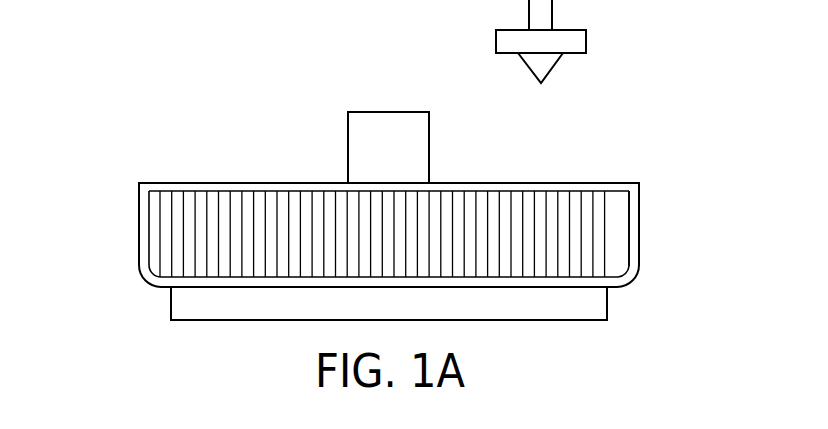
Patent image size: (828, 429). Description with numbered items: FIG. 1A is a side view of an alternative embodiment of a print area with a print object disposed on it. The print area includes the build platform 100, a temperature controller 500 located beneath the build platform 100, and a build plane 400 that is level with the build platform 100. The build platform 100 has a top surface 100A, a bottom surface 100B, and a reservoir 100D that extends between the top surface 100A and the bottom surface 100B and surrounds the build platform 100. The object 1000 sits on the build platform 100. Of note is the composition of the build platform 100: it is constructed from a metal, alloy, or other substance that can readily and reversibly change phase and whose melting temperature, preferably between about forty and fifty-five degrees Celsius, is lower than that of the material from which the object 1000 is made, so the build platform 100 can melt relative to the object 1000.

The object 1000 is at (388, 112).
The build plane 400 is at (138, 203).
The build platform 100 is at (148, 247).
The top surface 100A is at (187, 183).
The bottom surface 100B is at (618, 194).
The reservoir 100D is at (640, 272).
The temperature controller 500 is at (170, 302).